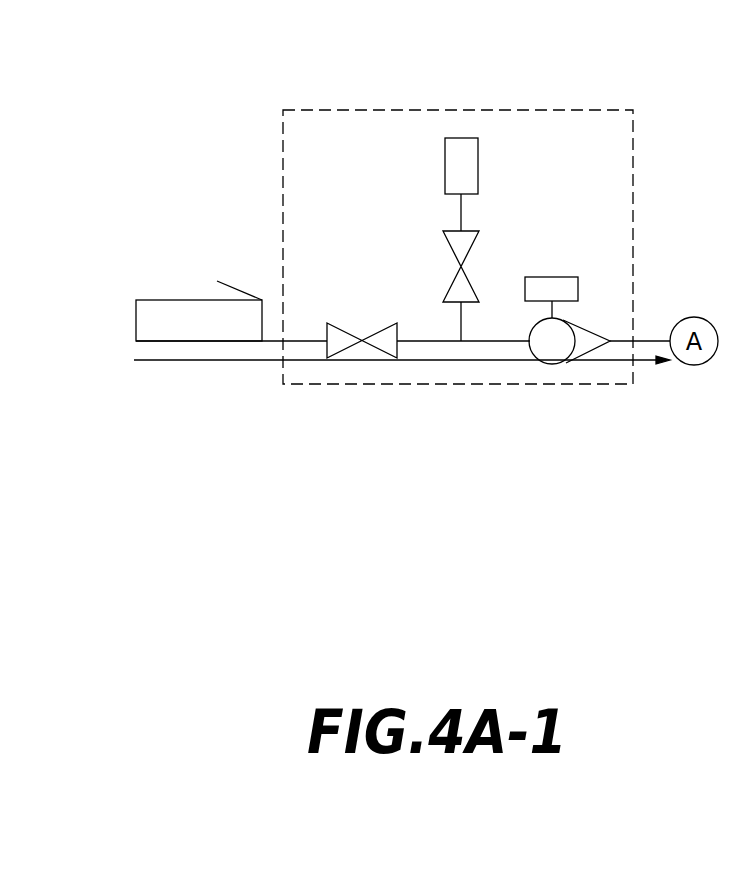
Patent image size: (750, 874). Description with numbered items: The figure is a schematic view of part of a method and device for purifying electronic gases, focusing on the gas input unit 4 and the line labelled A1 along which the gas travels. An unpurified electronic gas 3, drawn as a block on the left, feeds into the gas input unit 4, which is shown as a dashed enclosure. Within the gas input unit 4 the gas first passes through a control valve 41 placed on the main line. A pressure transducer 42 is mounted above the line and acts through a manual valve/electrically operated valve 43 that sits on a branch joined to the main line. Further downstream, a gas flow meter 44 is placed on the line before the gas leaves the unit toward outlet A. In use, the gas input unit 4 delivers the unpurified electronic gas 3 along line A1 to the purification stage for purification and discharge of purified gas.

The unpurified electronic gas 3 is at (156, 299).
The gas input unit 4 is at (329, 110).
The control valve 41 is at (350, 344).
The pressure transducer 42 is at (479, 165).
The manual valve/electrically operated valve 43 is at (457, 275).
The gas flow meter 44 is at (567, 277).
The return line A1 is at (198, 363).